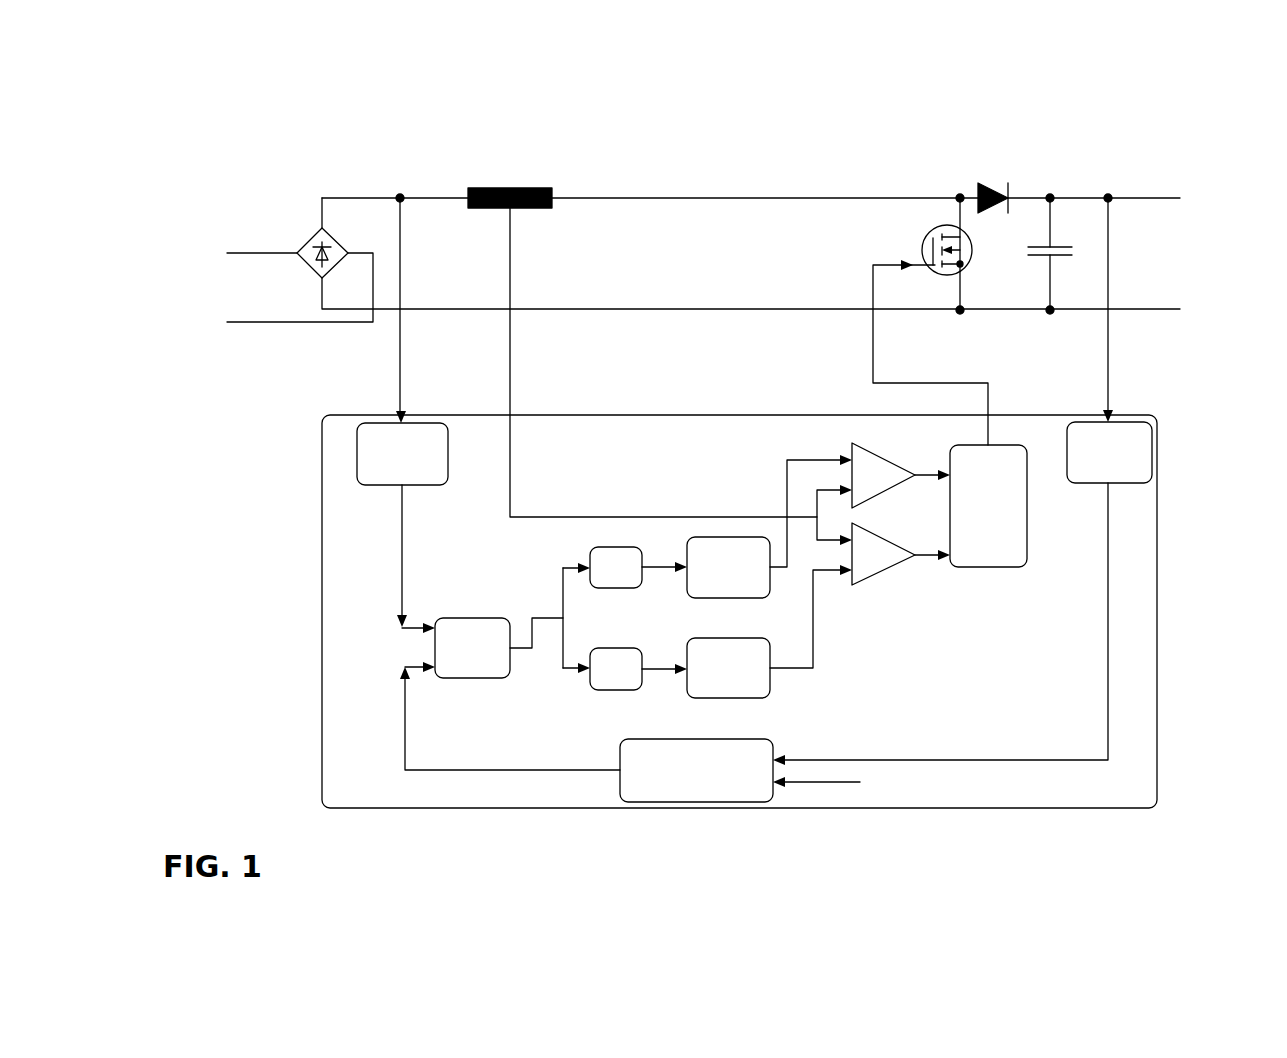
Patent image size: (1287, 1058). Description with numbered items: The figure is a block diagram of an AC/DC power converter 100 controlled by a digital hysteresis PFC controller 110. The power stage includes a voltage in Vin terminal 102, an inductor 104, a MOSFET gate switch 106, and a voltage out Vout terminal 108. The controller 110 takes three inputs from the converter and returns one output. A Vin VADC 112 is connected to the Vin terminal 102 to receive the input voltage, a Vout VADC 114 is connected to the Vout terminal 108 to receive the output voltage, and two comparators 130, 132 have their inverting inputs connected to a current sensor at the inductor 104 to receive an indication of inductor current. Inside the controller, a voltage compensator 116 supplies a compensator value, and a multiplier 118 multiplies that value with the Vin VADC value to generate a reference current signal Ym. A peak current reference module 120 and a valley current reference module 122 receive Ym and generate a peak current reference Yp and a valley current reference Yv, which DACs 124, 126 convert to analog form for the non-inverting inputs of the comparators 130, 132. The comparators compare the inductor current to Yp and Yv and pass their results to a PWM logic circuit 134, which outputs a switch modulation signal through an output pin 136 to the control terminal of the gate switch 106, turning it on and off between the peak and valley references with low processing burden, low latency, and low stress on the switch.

The AC/DC power converter 100 is at (677, 124).
The voltage in Vin terminal 102 is at (675, 253).
The inductor 104 is at (474, 169).
The MOSFET gate switch 106 is at (903, 254).
The voltage out Vout terminal 108 is at (1118, 229).
The digital hysteresis PFC controller 110 is at (673, 611).
The input voltage (Vin) voltage analog-to-digital converter (VADC) 112 is at (342, 415).
The output voltage (Vout) VADC 114 is at (1018, 481).
The voltage compensator 116 is at (630, 770).
The multiplier 118 is at (509, 611).
The peak current reference module 120 is at (627, 529).
The valley current reference module 122 is at (597, 685).
The digital to analog converter (DAC) 124 is at (762, 526).
The digital to analog converter (DAC) 126 is at (774, 640).
The comparator 130 is at (731, 362).
The comparator 132 is at (883, 580).
The pulse width modulation (PWM) logic circuit 134 is at (1028, 506).
The output pin 136 is at (970, 352).